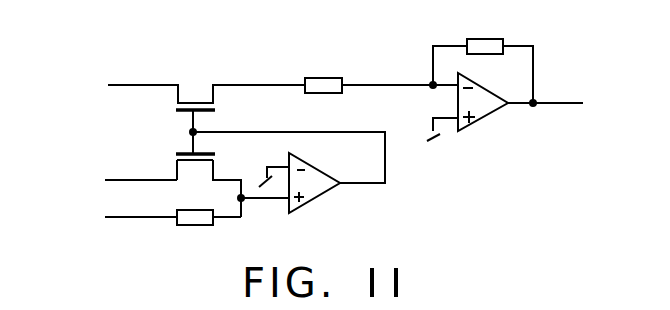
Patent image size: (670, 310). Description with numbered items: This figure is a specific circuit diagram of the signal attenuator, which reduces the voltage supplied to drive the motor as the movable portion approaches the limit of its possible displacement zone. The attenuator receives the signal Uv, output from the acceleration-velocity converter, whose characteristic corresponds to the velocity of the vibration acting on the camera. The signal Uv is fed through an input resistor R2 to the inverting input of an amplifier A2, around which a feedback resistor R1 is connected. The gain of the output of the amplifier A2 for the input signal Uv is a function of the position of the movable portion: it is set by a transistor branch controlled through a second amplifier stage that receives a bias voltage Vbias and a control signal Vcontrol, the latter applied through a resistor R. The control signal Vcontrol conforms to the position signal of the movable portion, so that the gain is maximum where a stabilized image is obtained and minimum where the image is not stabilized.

The resistor R is at (195, 231).
The feedback resistor R1 is at (485, 33).
The input resistor R2 is at (323, 72).
The amplifier A2 is at (487, 107).
The signal Uv is at (187, 87).
The bias voltage Vbias is at (113, 180).
The control signal Vcontrol is at (101, 218).